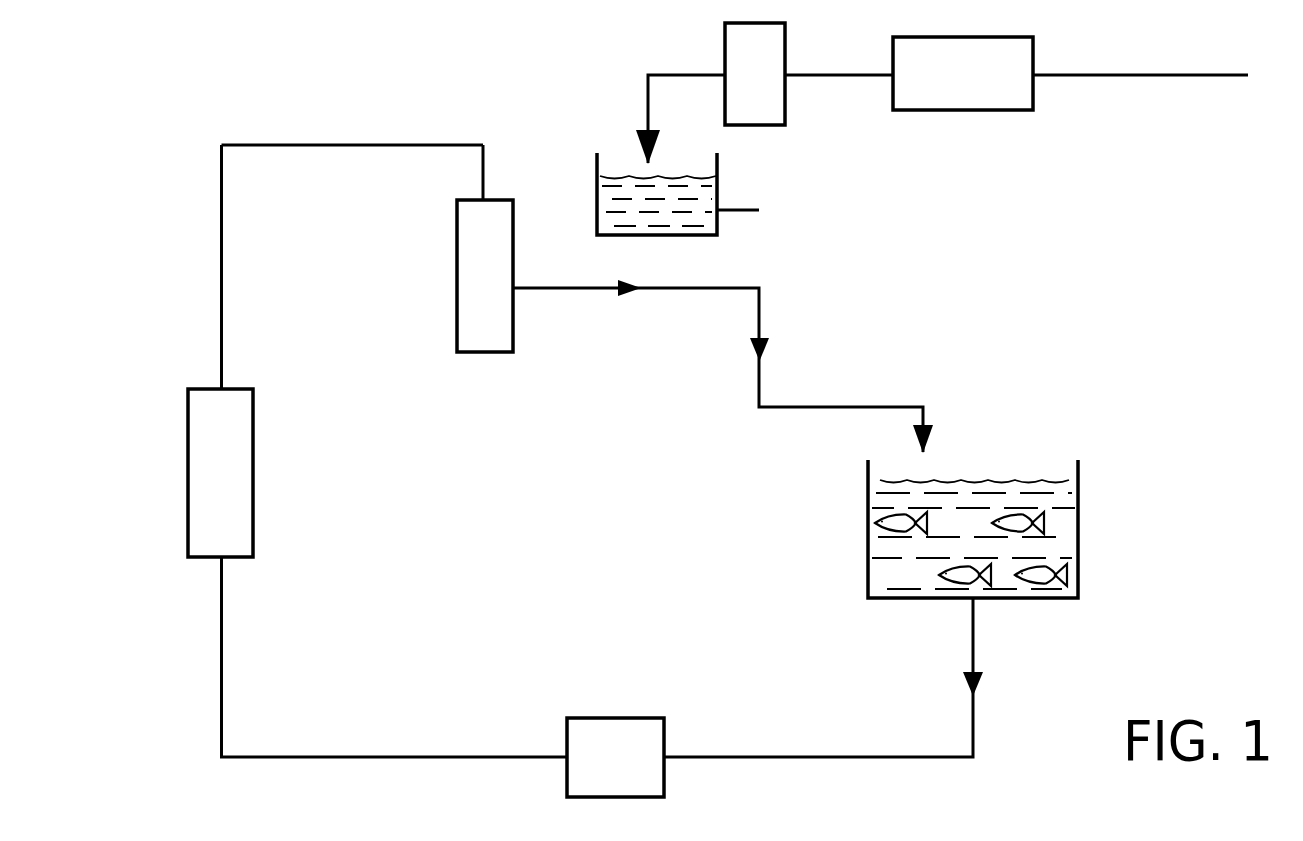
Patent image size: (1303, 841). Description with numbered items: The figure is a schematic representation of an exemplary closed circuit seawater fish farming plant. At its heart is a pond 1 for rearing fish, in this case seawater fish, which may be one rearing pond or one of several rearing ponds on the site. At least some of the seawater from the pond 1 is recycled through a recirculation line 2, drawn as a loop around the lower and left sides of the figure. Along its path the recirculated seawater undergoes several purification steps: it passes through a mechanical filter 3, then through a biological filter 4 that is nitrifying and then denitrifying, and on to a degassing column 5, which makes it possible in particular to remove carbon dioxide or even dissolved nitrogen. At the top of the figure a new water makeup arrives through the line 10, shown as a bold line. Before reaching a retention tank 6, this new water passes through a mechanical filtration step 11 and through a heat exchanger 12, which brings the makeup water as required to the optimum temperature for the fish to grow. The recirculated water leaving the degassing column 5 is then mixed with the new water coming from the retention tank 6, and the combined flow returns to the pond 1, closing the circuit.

The pond 1 is at (1078, 545).
The recirculation line 2 is at (352, 145).
The mechanical filter 3 is at (615, 718).
The biological filter 4 is at (253, 472).
The degassing column 5 is at (457, 278).
The retention tank 6 is at (597, 195).
The line 10 is at (1138, 78).
The mechanical filtration step 11 is at (966, 110).
The heat exchanger 12 is at (758, 125).